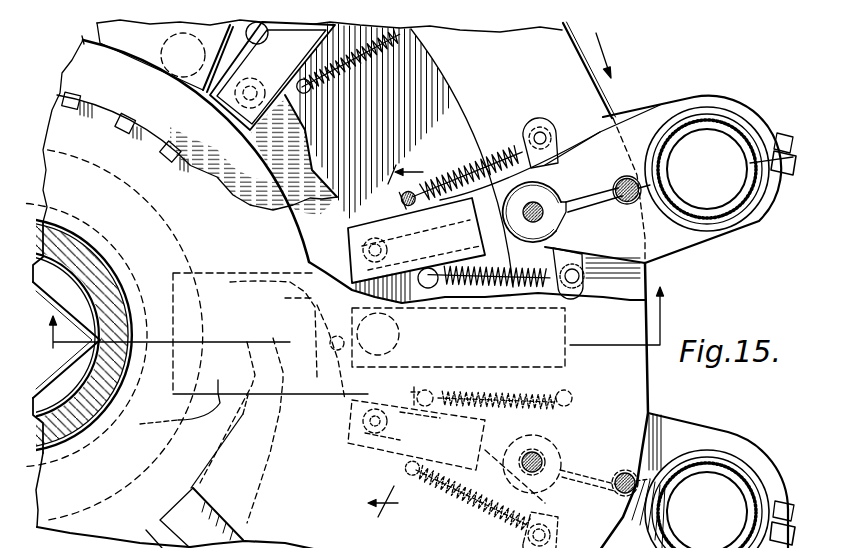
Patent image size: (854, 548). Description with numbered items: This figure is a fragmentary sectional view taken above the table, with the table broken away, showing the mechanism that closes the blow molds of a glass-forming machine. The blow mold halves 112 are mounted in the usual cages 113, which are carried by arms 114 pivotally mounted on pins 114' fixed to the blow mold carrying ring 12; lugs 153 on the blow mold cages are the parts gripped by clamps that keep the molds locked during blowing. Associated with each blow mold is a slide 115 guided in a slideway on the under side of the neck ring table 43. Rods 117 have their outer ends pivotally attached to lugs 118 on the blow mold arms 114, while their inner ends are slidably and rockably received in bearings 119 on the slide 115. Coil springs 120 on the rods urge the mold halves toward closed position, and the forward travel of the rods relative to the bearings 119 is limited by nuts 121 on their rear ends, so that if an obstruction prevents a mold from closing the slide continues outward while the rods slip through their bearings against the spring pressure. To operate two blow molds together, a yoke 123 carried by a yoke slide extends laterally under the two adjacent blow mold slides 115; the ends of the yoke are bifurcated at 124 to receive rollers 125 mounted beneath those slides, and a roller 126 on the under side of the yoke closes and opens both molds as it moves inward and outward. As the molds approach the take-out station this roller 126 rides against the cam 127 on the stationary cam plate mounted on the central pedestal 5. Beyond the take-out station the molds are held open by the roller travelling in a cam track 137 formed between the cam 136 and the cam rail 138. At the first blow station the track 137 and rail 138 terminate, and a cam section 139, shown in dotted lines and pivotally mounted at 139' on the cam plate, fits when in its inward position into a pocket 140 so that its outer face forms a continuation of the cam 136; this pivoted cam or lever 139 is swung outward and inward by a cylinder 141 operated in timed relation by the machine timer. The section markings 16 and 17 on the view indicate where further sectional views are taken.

The central pedestal 5 is at (62, 358).
The blow mold carrying ring 12 is at (561, 40).
The section line 16 is at (374, 271).
The section line 17 is at (358, 311).
The neck ring table 43 is at (637, 383).
The blow mold halves 112 is at (738, 203).
The cages 113 is at (752, 231).
The arms 114 is at (550, 293).
The pins 114' is at (598, 336).
The slide 115 is at (526, 199).
The rods 117 is at (494, 150).
The lugs 118 is at (561, 140).
The bearings 119 is at (427, 178).
The coil springs 120 is at (520, 130).
The nuts 121 is at (420, 223).
The yoke 123 is at (442, 366).
The bifurcated ends 124 is at (404, 413).
The rollers 125 is at (383, 436).
The roller 126 is at (420, 347).
The cam 127 is at (300, 524).
The cam 136 is at (215, 175).
The cam track 137 is at (297, 183).
The cam rail 138 is at (280, 200).
The cam section 139 is at (242, 352).
The pivot 139' is at (241, 430).
The pocket 140 is at (228, 441).
The cylinder 141 is at (115, 335).
The lugs 153 is at (784, 133).